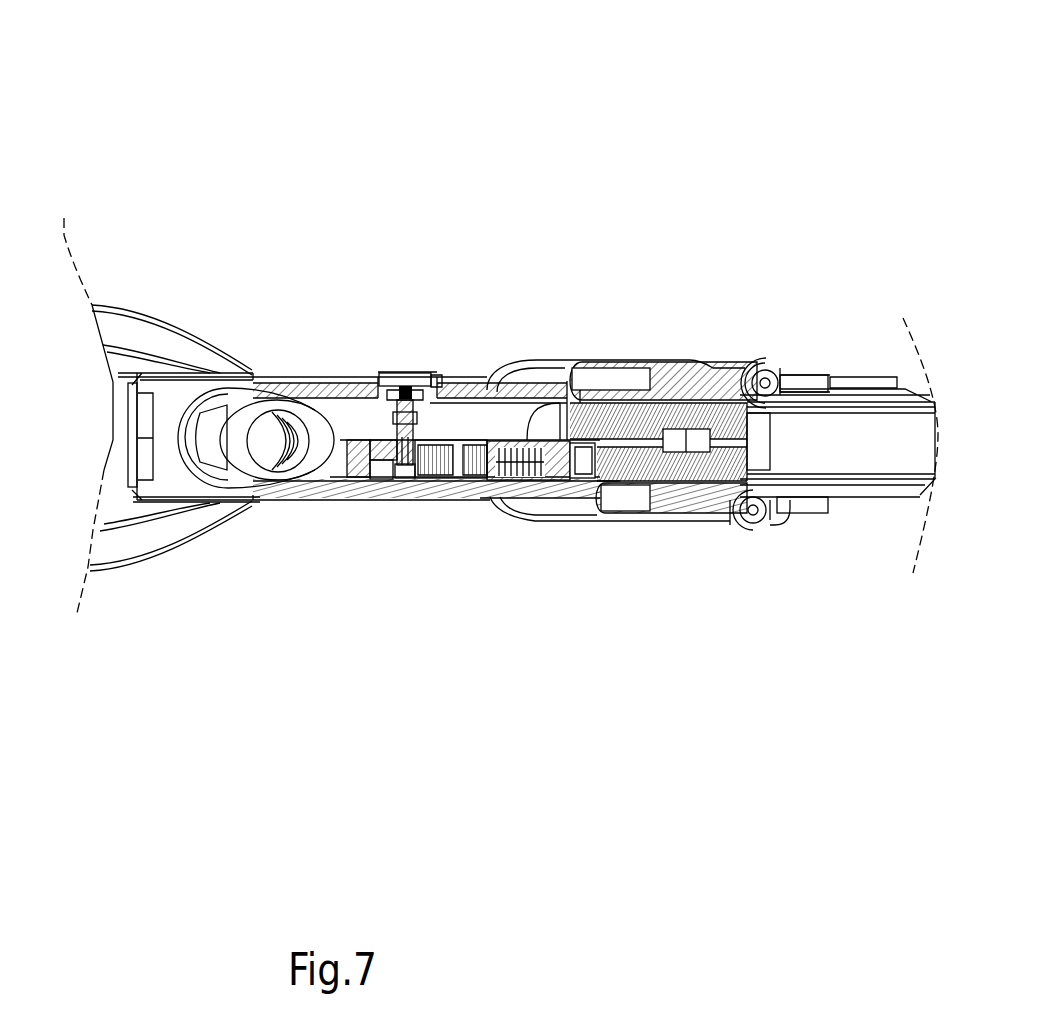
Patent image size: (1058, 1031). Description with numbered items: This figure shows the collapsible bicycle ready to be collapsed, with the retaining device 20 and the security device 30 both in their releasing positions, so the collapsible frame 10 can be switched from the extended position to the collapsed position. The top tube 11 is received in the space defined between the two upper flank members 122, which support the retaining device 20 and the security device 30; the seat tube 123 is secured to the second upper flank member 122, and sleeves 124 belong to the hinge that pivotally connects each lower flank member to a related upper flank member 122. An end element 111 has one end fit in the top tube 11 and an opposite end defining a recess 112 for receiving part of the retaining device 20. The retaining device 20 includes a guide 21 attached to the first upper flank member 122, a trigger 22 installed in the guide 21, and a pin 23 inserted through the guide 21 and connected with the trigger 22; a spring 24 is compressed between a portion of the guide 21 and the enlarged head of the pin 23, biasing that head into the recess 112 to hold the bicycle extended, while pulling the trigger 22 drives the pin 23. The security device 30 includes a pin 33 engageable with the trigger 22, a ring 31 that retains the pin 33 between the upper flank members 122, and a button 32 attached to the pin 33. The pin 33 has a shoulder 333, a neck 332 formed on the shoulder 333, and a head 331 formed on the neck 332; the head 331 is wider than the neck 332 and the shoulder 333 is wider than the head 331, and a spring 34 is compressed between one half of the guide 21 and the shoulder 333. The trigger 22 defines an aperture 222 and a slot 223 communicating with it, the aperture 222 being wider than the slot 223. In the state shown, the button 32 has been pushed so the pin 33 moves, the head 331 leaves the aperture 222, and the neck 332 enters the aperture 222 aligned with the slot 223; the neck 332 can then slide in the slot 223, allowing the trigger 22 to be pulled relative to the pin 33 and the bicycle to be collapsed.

The collapsible frame 10 is at (609, 113).
The top tube 11 is at (857, 420).
The retaining device 20 is at (258, 547).
The guide 21 is at (338, 490).
The trigger 22 is at (477, 462).
The pin 23 is at (560, 482).
The spring 24 is at (513, 481).
The security device 30 is at (391, 224).
The ring 31 is at (432, 398).
The button 32 is at (420, 382).
The pin 33 is at (403, 392).
The spring 34 is at (373, 436).
The end element 111 is at (680, 475).
The recess 112 is at (610, 475).
The upper flank members 122 is at (680, 362).
The seat tube 123 is at (310, 418).
The sleeves 124 is at (750, 370).
The aperture 222 is at (340, 422).
The slot 223 is at (390, 462).
The head 331 is at (395, 468).
The neck 332 is at (408, 474).
The shoulder 333 is at (423, 427).